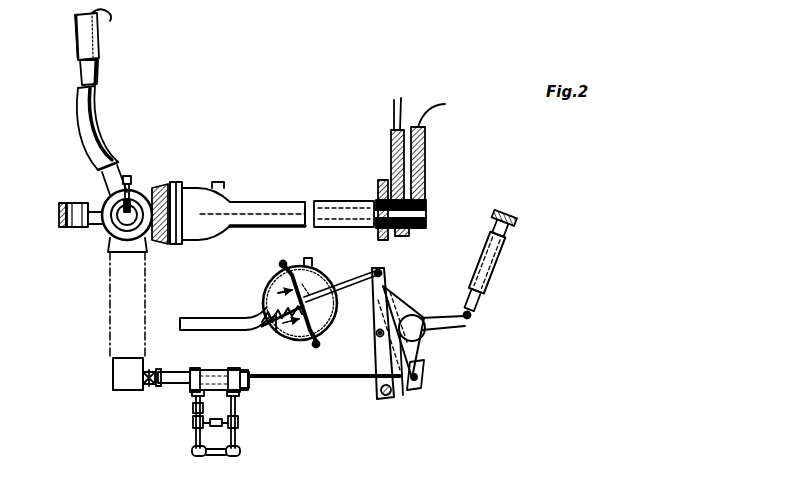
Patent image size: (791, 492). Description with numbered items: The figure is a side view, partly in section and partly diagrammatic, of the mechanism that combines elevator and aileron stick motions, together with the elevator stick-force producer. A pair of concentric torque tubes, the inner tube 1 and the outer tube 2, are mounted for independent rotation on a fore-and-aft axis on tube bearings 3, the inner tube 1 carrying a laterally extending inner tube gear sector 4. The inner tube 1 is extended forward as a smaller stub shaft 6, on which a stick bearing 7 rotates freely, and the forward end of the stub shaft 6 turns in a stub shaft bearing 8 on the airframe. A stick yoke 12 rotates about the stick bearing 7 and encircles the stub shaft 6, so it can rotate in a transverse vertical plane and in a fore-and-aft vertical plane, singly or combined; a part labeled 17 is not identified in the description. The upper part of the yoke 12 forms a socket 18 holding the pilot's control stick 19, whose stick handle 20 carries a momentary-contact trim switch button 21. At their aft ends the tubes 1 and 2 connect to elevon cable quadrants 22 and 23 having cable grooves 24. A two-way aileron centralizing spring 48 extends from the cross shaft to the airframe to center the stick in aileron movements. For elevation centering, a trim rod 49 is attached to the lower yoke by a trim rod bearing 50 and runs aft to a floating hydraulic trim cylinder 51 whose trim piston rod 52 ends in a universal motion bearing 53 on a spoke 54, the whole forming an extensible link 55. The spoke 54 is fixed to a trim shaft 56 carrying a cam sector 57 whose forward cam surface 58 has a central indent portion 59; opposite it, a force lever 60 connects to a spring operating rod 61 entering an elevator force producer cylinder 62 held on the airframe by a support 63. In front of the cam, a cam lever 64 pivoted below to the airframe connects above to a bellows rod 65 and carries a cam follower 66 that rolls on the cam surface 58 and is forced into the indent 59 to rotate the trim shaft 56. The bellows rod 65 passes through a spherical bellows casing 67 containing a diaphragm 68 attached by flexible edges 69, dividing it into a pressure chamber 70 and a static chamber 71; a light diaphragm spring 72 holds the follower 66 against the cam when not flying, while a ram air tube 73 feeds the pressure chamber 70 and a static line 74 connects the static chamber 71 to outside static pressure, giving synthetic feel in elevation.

The inner torque tube 1 is at (427, 209).
The outer torque tube 2 is at (287, 208).
The tube bearings 3 is at (55, 205).
The inner tube gear sector 4 is at (106, 138).
The stub shaft 6 is at (108, 232).
The stick bearing 7 is at (458, 330).
The stub shaft bearing 8 is at (76, 203).
The stick yoke 12 is at (150, 196).
The collar 17 is at (172, 244).
The socket 18 is at (134, 165).
The pilot's control stick 19 is at (97, 120).
The stick handle 20 is at (98, 72).
The momentary-contact trim switch button 21 is at (108, 18).
The elevon cable quadrant 22 is at (426, 173).
The elevon cable quadrant 23 is at (390, 148).
The cable grooves 24 is at (423, 103).
The two-way aileron centralizing spring 48 is at (145, 178).
The trim rod 49 is at (160, 372).
The trim rod bearing 50 is at (135, 392).
The floating hydraulic trim cylinder 51 is at (210, 372).
The trim piston rod 52 is at (268, 380).
The universal motion bearing 53 is at (406, 392).
The spoke 54 is at (418, 368).
The extensible link 55 is at (266, 432).
The trim shaft 56 is at (413, 326).
The cam sector 57 is at (398, 290).
The cam surface 58 is at (378, 326).
The central indent portion 59 is at (396, 350).
The force lever 60 is at (445, 330).
The spring operating rod 61 is at (480, 312).
The elevator force producer cylinder 62 is at (486, 292).
The support 63 is at (508, 222).
The cam lever 64 is at (384, 396).
The bellows rod 65 is at (377, 272).
The cam follower 66 is at (374, 340).
The bellows casing 67 is at (266, 282).
The diaphragm 68 is at (280, 336).
The flexible edges 69 is at (283, 264).
The pressure chamber 70 is at (282, 305).
The static chamber 71 is at (314, 292).
The diaphragm spring 72 is at (262, 312).
The ram air tube 73 is at (148, 324).
The static line 74 is at (312, 260).